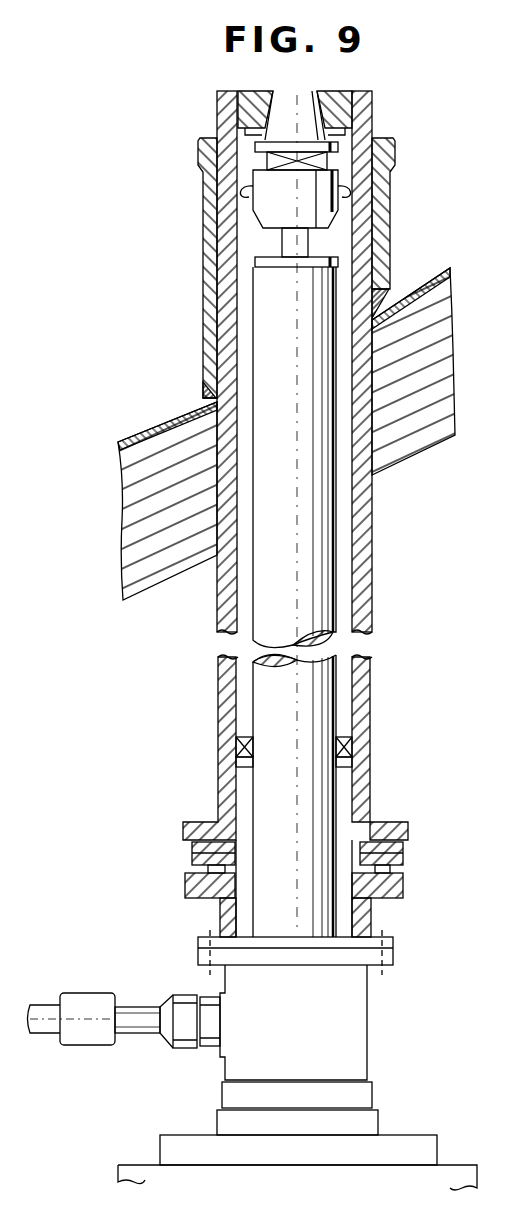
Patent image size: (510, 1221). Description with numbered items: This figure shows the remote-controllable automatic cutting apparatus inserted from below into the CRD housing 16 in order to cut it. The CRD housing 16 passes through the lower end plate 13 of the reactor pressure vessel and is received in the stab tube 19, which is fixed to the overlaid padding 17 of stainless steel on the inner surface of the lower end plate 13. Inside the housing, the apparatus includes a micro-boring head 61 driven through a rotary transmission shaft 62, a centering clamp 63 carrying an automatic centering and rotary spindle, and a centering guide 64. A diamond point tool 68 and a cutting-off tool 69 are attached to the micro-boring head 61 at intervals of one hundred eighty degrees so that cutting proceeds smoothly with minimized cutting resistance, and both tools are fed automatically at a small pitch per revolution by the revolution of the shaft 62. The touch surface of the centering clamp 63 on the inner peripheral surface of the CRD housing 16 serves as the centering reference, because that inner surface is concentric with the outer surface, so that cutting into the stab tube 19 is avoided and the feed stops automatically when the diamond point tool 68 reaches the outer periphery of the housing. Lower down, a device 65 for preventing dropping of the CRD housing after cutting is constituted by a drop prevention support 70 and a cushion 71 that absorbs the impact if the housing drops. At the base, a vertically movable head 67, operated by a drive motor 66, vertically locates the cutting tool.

The lower end plate 13 is at (415, 437).
The CRD housing 16 is at (372, 530).
The overlaid padding 17 is at (162, 422).
The stab tube 19 is at (383, 226).
The micro-boring head 61 is at (265, 202).
The rotary transmission shaft 62 is at (325, 600).
The centering clamp 63 is at (265, 110).
The centering guide 64 is at (352, 750).
The device for preventing dropping of the CRD housing 65 is at (284, 869).
The drive motor 66 is at (353, 1027).
The vertically movable head 67 is at (450, 1178).
The diamond point tool 68 is at (247, 189).
The cutting-off tool 69 is at (352, 190).
The drop prevention support 70 is at (400, 868).
The cushion 71 is at (405, 856).